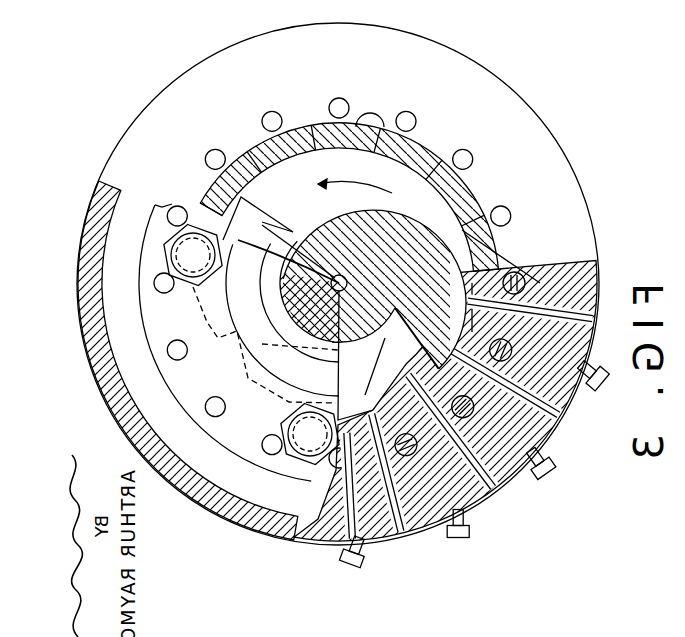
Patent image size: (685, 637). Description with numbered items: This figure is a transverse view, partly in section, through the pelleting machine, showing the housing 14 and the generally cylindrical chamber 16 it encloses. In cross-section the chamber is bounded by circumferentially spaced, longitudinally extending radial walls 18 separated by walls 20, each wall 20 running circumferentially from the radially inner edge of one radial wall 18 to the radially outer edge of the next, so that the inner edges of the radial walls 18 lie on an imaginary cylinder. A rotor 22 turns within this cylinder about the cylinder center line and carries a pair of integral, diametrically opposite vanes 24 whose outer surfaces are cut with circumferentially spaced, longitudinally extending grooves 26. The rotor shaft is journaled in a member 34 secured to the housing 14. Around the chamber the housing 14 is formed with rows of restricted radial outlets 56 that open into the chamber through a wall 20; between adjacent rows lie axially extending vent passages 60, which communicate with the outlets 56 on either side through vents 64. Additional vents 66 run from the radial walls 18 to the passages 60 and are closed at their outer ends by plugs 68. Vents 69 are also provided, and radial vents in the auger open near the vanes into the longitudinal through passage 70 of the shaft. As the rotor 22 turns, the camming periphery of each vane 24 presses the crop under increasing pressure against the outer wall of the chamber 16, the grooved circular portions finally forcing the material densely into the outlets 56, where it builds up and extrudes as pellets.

The housing 14 is at (571, 137).
The chamber 16 is at (396, 200).
The radial walls 18 is at (392, 152).
The walls 20 is at (500, 190).
The rotor 22 is at (367, 342).
The vanes 24 is at (285, 331).
The grooves 26 is at (190, 188).
The journal member 34 is at (185, 382).
The restricted outlets 56 is at (575, 440).
The vent passages 60 is at (445, 120).
The vents 64 is at (523, 494).
The additional vents 66 is at (527, 250).
The plugs 68 is at (553, 492).
The vents 69 is at (306, 217).
The longitudinal through passage 70 is at (280, 282).